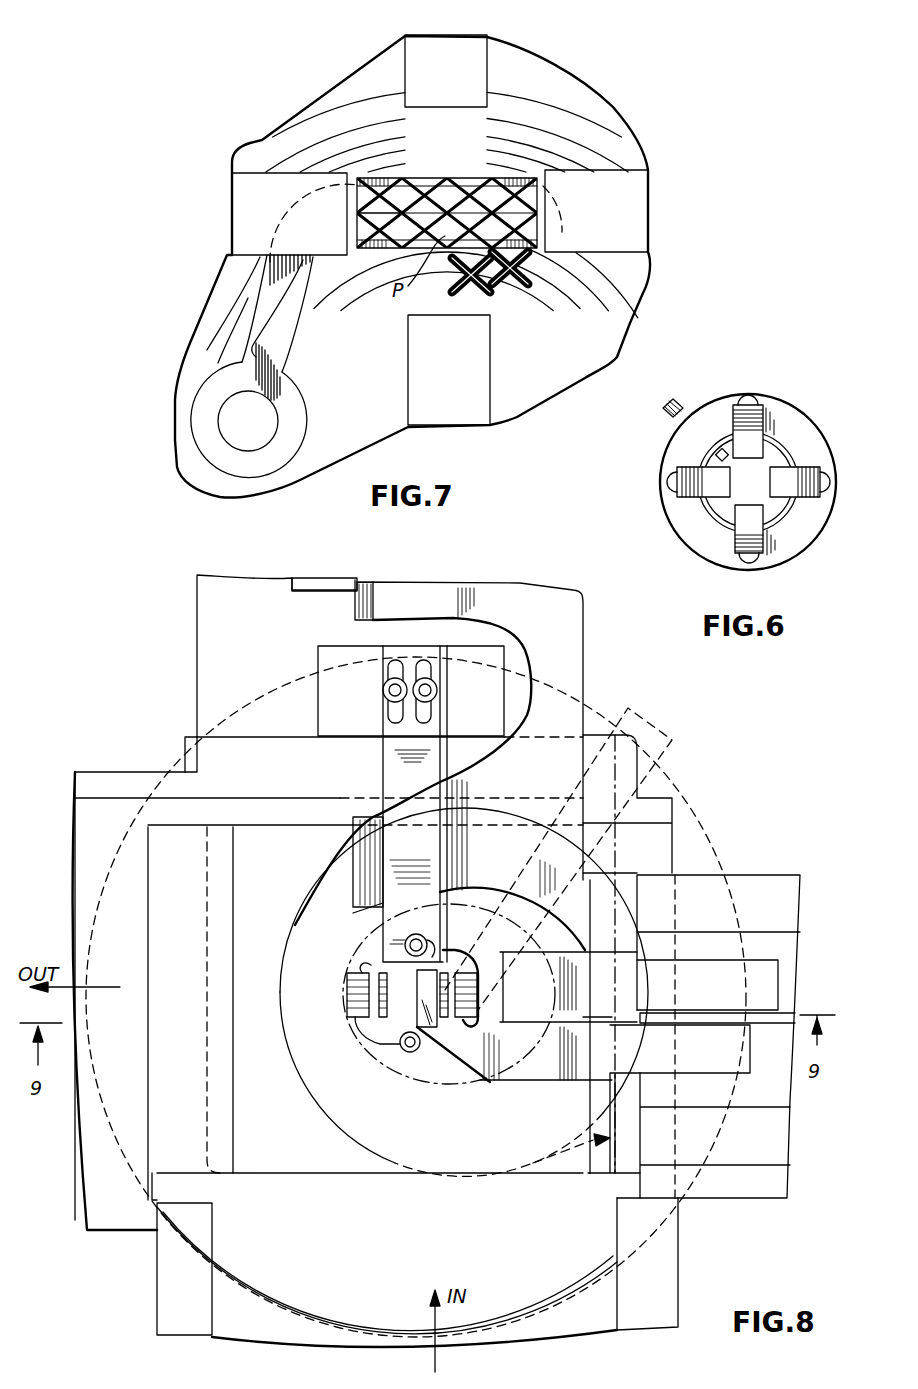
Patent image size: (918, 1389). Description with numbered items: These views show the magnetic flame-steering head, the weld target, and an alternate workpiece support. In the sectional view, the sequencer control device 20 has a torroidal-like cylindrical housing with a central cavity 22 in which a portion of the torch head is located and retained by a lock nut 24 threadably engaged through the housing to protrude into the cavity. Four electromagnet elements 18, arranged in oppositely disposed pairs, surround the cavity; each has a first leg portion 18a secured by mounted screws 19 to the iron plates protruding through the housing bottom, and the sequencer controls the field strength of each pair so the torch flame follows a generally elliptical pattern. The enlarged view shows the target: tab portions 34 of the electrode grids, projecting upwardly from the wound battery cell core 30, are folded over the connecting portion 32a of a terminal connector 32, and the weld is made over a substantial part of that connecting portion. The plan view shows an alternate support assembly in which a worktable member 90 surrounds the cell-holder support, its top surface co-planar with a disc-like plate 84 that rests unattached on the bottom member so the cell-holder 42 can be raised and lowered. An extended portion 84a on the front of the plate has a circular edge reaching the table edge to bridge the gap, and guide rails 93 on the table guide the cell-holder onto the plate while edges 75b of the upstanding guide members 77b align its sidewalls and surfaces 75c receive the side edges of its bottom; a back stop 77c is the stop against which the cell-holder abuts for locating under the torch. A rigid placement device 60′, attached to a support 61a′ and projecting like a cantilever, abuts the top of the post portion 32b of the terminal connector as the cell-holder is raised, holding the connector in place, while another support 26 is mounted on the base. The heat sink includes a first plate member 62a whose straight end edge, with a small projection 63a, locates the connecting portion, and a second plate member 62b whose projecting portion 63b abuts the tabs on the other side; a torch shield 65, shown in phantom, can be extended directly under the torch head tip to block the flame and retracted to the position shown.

In FIG. 7, the first leg portion 18a is at (467, 48).
In FIG. 7, the terminal connector 32 is at (350, 212).
In FIG. 8, the terminal connector 32 is at (453, 930).
In FIG. 7, the connecting portion 32a is at (198, 422).
In FIG. 7, the tab portions 34 is at (535, 181).
In FIG. 6, the electromagnet elements 18 is at (712, 470).
In FIG. 6, the mounted screws 19 is at (748, 397).
In FIG. 6, the sequencer control device 20 is at (828, 446).
In FIG. 8, the sequencer control device 20 is at (600, 862).
In FIG. 6, the central cavity 22 is at (766, 449).
In FIG. 6, the lock nut 24 is at (665, 412).
In FIG. 8, the support 26 is at (578, 668).
In FIG. 8, the wound battery cell core 30 is at (360, 948).
In FIG. 8, the post portion 32b is at (360, 980).
In FIG. 8, the cell-holder 42 is at (338, 1173).
In FIG. 8, the placement device 60′ is at (390, 753).
In FIG. 8, the support 61a′ is at (322, 649).
In FIG. 8, the first plate member 62a is at (628, 928).
In FIG. 8, the second plate member 62b is at (583, 1085).
In FIG. 8, the small projection 63a is at (533, 937).
In FIG. 8, the projecting portion 63b is at (433, 993).
In FIG. 8, the torch shield 65 is at (658, 770).
In FIG. 8, the edges of guides 75b is at (238, 943).
In FIG. 8, the surfaces of guides 75c is at (227, 1102).
In FIG. 8, the guide members 77b is at (223, 1158).
In FIG. 8, the back stop 77c is at (283, 810).
In FIG. 8, the disc-like plate 84 is at (370, 1093).
In FIG. 8, the extended portion 84a is at (540, 1300).
In FIG. 8, the worktable member 90 is at (76, 855).
In FIG. 8, the guide rails 93 is at (177, 1282).